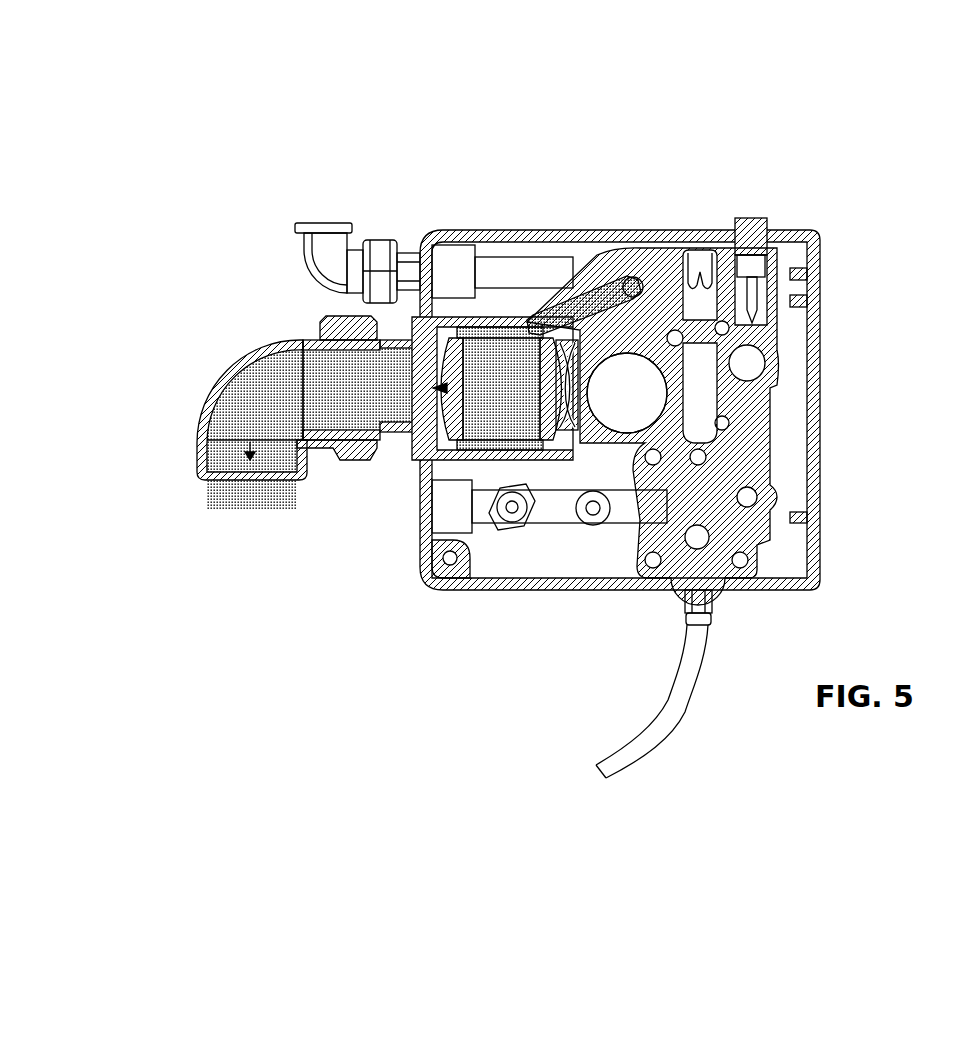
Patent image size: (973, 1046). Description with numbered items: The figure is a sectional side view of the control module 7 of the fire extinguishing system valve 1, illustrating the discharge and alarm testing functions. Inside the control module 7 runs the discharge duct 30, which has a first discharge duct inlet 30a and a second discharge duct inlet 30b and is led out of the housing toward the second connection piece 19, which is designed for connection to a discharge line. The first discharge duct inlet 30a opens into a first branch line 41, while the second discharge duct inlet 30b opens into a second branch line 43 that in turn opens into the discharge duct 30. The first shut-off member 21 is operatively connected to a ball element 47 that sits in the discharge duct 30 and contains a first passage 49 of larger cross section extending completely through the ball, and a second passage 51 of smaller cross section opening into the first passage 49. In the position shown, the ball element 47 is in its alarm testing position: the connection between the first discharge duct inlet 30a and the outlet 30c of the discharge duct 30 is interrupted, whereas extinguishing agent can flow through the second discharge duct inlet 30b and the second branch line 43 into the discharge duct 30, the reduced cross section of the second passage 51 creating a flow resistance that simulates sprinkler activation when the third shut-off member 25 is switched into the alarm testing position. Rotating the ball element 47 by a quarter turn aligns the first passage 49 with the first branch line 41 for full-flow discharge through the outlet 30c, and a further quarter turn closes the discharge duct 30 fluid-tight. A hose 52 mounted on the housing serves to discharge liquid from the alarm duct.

The fire extinguishing system valve 1 is at (242, 179).
The control module 7 is at (493, 230).
The second connection piece 19 is at (210, 388).
The first shut-off member 21 is at (576, 400).
The third shut-off member 25 is at (635, 289).
The discharge duct 30 is at (406, 418).
The first discharge duct inlet 30a is at (630, 386).
The second discharge duct inlet 30b is at (682, 219).
The outlet of the discharge duct 30c is at (380, 385).
The first branch line 41 is at (572, 418).
The second branch line 43 is at (570, 312).
The ball element 47 is at (746, 406).
The first passage 49 is at (497, 432).
The second passage 51 is at (462, 323).
The hose 52 is at (628, 748).